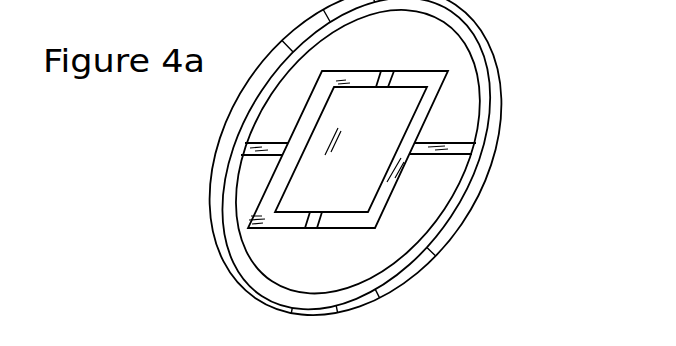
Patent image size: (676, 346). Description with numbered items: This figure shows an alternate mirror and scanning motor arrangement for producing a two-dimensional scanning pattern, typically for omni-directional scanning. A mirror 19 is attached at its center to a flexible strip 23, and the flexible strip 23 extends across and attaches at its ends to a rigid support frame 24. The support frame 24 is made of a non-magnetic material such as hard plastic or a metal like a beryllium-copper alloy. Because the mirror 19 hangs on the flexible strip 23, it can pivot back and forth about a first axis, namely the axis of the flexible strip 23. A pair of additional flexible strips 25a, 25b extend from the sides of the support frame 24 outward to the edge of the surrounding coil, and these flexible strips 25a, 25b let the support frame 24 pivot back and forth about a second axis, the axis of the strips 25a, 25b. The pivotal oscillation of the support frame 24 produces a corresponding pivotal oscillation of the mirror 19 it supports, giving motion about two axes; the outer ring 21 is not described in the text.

The mirror 19 is at (430, 107).
The ring 21 is at (422, 225).
The flexible strip 23 is at (435, 73).
The rigid support frame 24 is at (262, 230).
The flexible strip 25a is at (245, 158).
The flexible strip 25b is at (448, 155).